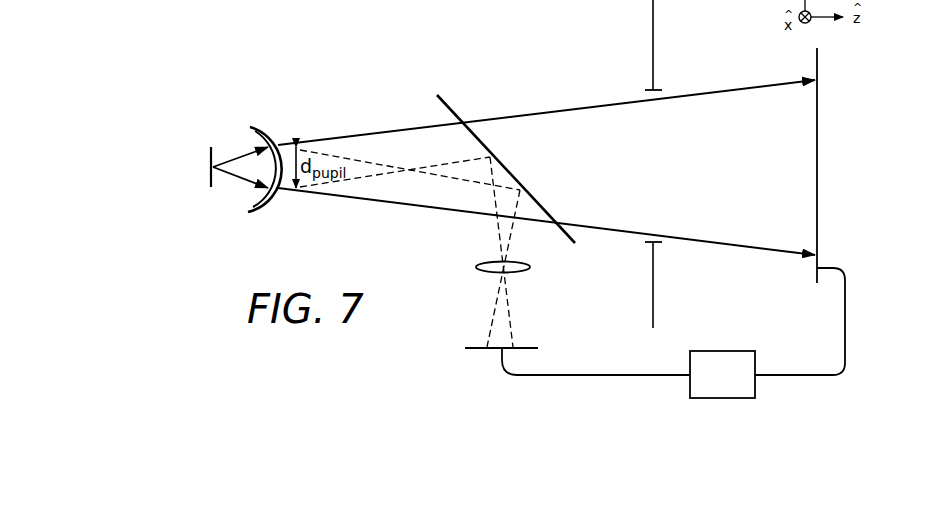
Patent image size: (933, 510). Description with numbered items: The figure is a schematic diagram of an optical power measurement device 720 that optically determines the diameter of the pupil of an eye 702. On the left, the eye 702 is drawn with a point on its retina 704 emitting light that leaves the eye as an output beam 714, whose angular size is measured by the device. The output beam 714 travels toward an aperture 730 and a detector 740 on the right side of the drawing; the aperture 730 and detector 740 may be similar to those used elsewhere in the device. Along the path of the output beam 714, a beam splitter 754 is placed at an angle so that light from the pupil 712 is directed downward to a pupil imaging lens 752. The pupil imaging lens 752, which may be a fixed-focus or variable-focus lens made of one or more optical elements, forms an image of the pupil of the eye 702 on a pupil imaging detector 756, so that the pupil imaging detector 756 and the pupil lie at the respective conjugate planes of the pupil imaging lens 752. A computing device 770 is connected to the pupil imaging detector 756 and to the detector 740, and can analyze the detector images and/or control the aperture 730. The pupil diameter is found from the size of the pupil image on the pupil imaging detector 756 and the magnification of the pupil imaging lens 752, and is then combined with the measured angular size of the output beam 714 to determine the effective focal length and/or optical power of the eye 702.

The eye 702 is at (265, 128).
The retina 704 is at (208, 150).
The reflected light beam 712 is at (500, 243).
The output beam 714 is at (392, 205).
The optical power measurement device 720 is at (858, 351).
The aperture 730 is at (655, 20).
The detector 740 is at (818, 112).
The pupil imaging lens 752 is at (530, 270).
The beam splitter 754 is at (540, 203).
The pupil imaging detector 756 is at (527, 350).
The computing device 770 is at (722, 374).